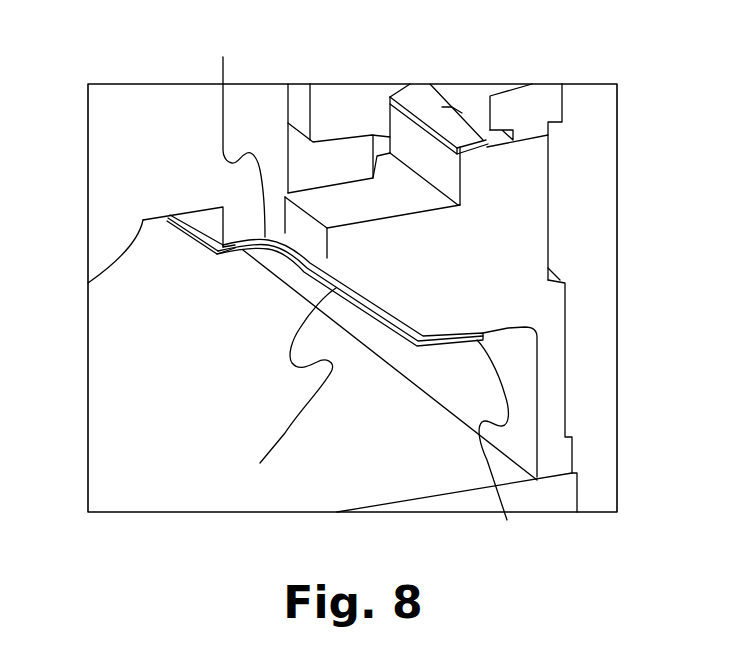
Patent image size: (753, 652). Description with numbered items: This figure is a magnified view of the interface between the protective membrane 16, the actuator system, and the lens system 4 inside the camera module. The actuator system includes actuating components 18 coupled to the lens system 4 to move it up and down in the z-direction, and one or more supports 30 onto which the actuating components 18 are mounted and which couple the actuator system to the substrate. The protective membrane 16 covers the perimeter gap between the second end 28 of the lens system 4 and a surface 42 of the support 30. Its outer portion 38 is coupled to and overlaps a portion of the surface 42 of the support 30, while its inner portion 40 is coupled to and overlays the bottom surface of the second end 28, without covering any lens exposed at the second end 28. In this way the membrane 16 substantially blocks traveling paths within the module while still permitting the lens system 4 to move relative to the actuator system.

The lens system 4 is at (176, 159).
The protective membrane 16 is at (260, 463).
The actuating components 18 is at (528, 115).
The second end 28 is at (335, 143).
The support 30 is at (528, 293).
The outer portion 38 is at (507, 520).
The inner portion 40 is at (235, 250).
The surface 42 is at (517, 330).